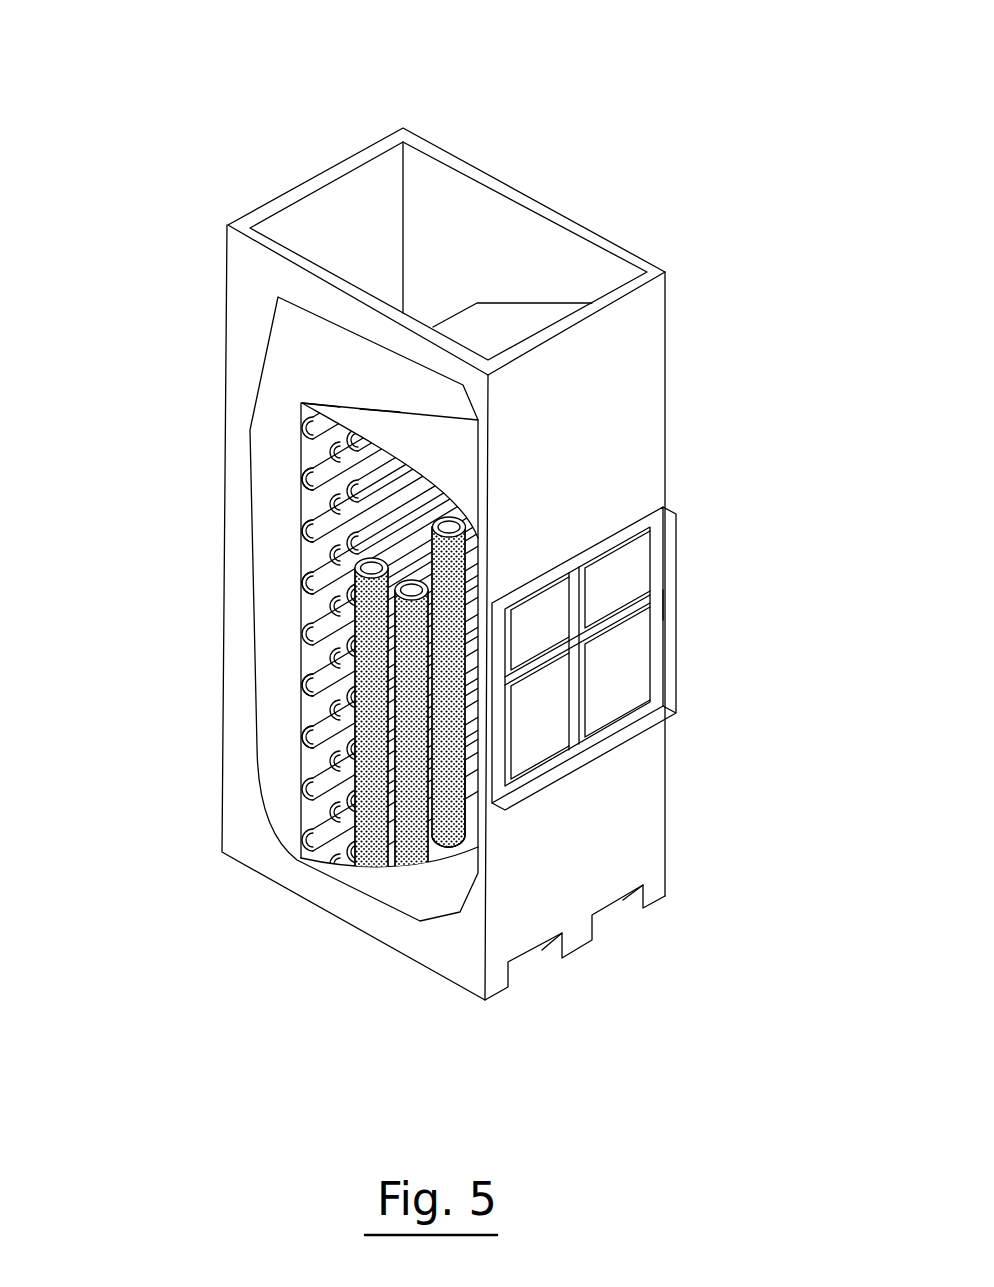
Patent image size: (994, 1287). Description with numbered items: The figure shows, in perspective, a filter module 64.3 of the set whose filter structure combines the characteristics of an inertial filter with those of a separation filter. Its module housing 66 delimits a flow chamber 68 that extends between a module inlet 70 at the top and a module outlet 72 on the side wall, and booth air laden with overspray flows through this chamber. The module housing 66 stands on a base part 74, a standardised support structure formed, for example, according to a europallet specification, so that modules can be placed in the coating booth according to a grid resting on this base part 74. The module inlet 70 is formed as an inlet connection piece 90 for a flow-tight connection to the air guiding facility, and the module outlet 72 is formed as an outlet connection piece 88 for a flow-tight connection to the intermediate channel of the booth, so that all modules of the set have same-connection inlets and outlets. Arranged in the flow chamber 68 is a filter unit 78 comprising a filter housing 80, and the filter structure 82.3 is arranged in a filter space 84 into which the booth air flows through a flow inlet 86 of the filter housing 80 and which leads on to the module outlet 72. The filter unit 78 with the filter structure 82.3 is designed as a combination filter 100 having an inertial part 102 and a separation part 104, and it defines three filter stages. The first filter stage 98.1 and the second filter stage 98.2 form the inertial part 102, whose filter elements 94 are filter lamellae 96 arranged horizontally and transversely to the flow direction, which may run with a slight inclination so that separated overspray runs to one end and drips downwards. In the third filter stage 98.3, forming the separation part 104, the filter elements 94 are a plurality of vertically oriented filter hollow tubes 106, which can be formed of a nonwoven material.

The filter module 64.3 is at (580, 232).
The module housing 66 is at (637, 383).
The flow chamber 68 is at (285, 360).
The module inlet 70 is at (315, 198).
The module outlet 72 is at (628, 587).
The base part 74 is at (334, 917).
The filter unit 78 is at (465, 453).
The filter housing 80 is at (472, 492).
The filter structure 82.3 is at (278, 672).
The filter space 84 is at (440, 845).
The flow inlet 86 is at (323, 573).
The outlet connection piece 88 is at (686, 603).
The inlet connection piece 90 is at (369, 130).
The filter elements 94 is at (288, 557).
The filter lamellae 96 is at (445, 490).
The first filter stage 98.1 is at (334, 389).
The second filter stage 98.2 is at (380, 416).
The third filter stage 98.3 is at (446, 869).
The combination filter 100 is at (277, 458).
The inertial part 102 is at (293, 724).
The separation part 104 is at (481, 820).
The filter hollow tubes 106 is at (463, 562).